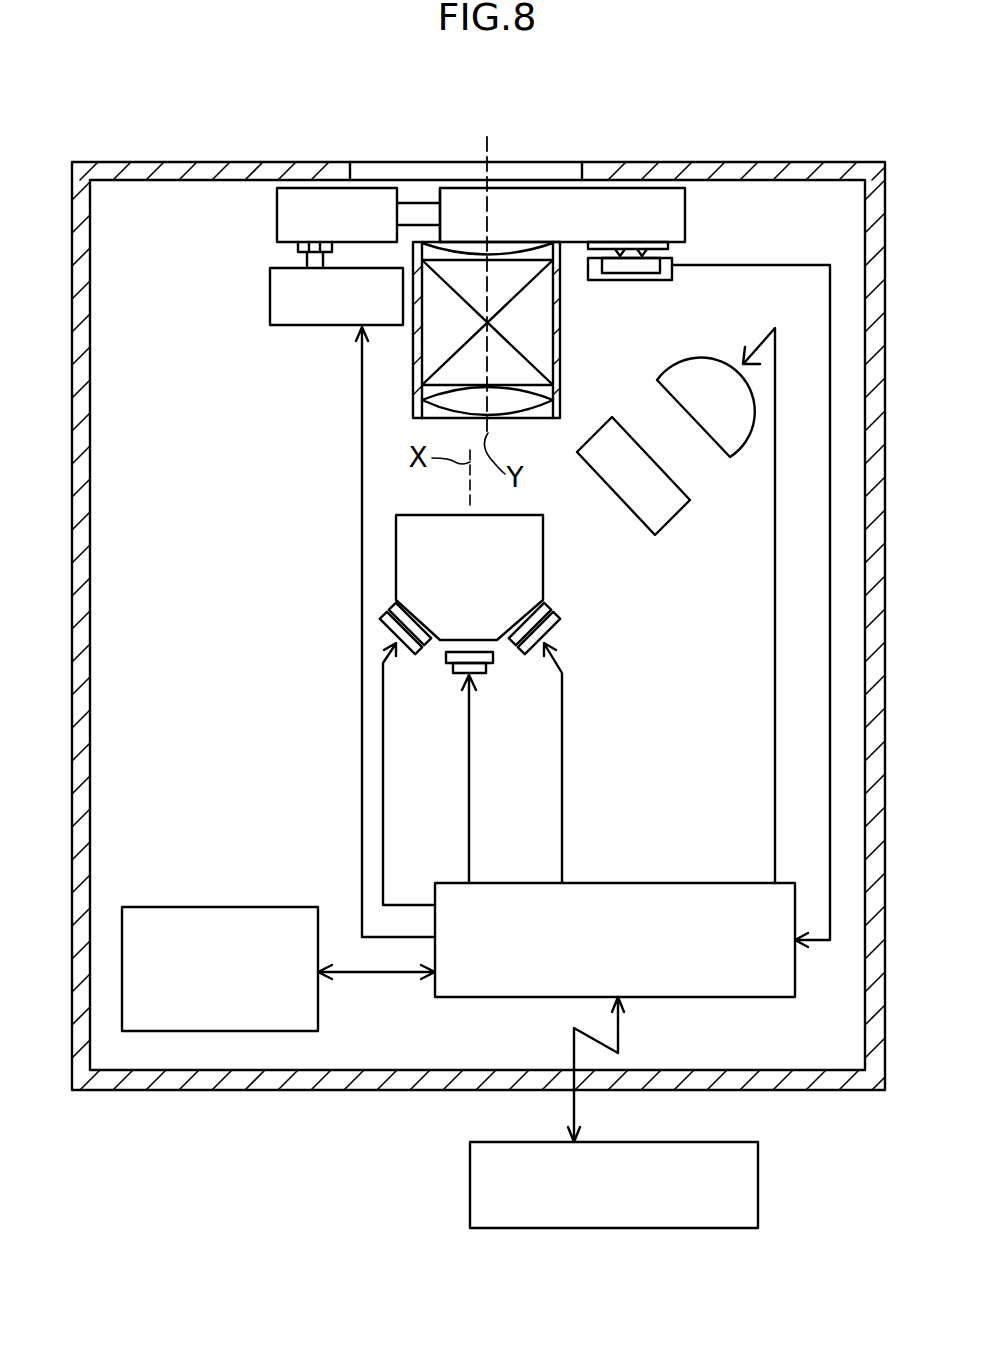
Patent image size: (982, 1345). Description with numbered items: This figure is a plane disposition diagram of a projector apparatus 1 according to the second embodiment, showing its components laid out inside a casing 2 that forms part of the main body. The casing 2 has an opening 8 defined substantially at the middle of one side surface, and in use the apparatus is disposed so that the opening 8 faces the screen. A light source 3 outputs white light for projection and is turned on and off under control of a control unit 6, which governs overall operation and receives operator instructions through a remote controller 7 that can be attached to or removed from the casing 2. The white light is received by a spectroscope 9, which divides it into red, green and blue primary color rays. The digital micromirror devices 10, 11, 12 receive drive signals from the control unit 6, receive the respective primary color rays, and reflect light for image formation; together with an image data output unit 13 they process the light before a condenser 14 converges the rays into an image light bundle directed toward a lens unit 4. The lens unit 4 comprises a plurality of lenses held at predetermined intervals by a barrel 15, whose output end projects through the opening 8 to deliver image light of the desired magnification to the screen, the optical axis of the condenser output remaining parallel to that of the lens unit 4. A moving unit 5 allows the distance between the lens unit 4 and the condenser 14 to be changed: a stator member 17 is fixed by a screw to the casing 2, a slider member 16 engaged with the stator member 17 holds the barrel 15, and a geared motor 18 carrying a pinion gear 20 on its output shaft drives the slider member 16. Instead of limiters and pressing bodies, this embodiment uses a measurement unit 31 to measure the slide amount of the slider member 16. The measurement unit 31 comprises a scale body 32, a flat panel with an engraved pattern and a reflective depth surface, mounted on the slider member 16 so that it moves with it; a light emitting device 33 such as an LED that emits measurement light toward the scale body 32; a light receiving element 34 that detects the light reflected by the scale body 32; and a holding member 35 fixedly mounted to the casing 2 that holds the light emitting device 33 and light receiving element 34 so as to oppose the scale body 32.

The projector apparatus 1 is at (410, 122).
The casing 2 is at (733, 162).
The light source 3 is at (696, 410).
The lens unit 4 is at (520, 418).
The moving unit 5 is at (441, 256).
The control unit 6 is at (657, 883).
The remote controller 7 is at (470, 1195).
The opening 8 is at (540, 162).
The spectroscope 9 is at (624, 497).
The digital micromirror device 10 is at (425, 648).
The digital micromirror device 11 is at (493, 665).
The digital micromirror device 12 is at (555, 617).
The image data output unit 13 is at (190, 907).
The condenser 14 is at (447, 590).
The barrel 15 is at (515, 358).
The slider member 16 is at (312, 235).
The stator member 17 is at (572, 235).
The geared motor 18 is at (312, 315).
The pinion gear 20 is at (298, 249).
The measurement unit 31 is at (709, 524).
The scale body 32 is at (672, 258).
The light emitting device 33 is at (640, 243).
The light receiving element 34 is at (621, 255).
The holding member 35 is at (628, 282).